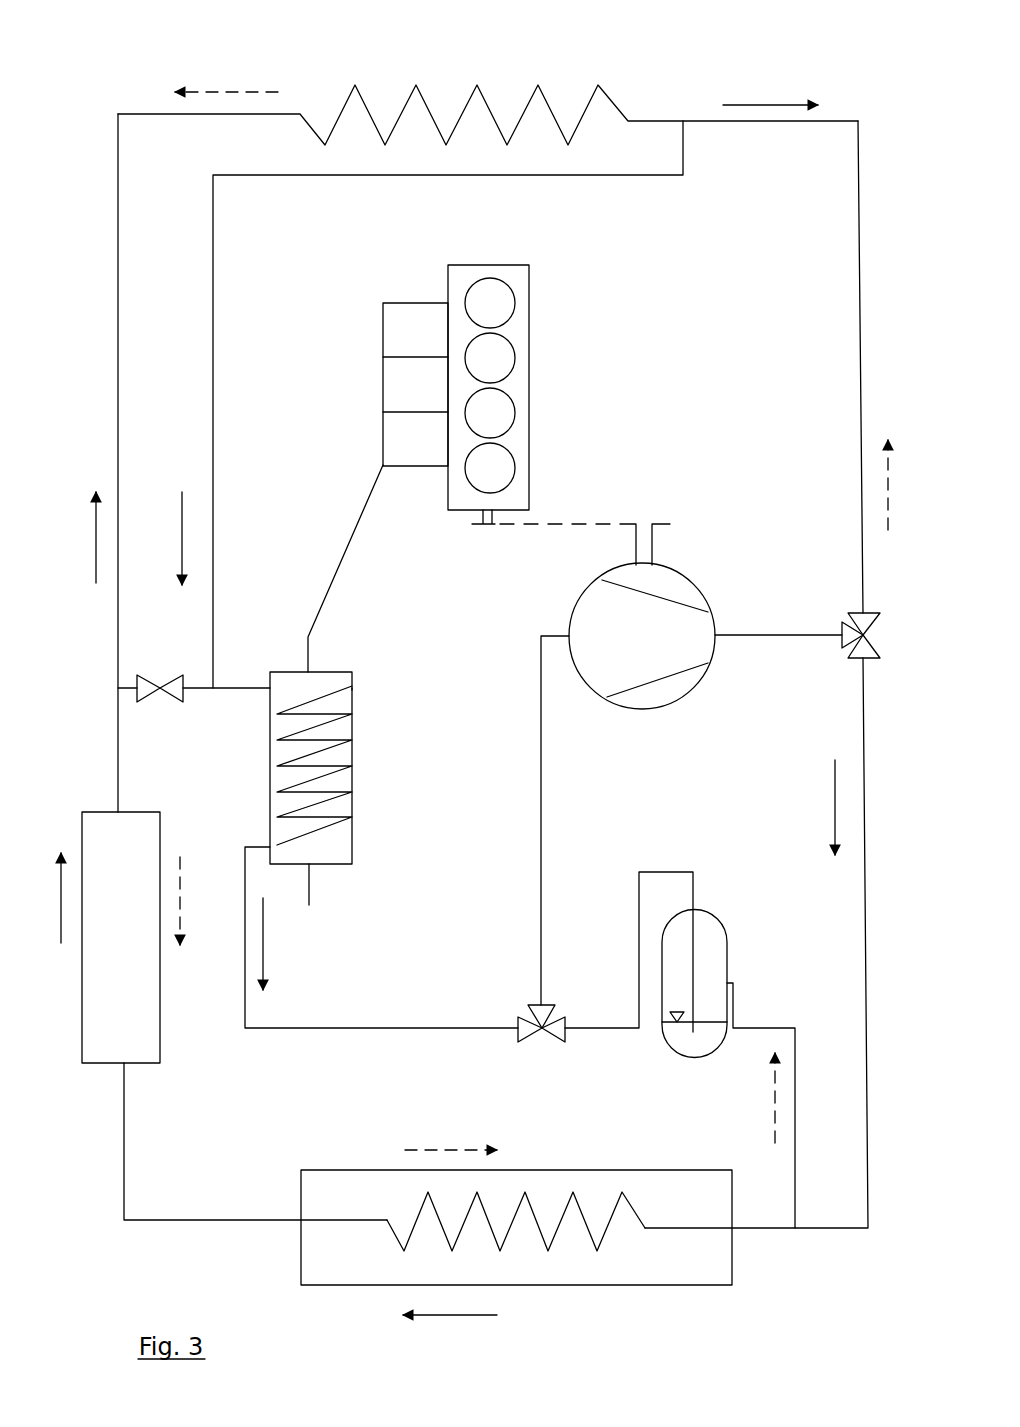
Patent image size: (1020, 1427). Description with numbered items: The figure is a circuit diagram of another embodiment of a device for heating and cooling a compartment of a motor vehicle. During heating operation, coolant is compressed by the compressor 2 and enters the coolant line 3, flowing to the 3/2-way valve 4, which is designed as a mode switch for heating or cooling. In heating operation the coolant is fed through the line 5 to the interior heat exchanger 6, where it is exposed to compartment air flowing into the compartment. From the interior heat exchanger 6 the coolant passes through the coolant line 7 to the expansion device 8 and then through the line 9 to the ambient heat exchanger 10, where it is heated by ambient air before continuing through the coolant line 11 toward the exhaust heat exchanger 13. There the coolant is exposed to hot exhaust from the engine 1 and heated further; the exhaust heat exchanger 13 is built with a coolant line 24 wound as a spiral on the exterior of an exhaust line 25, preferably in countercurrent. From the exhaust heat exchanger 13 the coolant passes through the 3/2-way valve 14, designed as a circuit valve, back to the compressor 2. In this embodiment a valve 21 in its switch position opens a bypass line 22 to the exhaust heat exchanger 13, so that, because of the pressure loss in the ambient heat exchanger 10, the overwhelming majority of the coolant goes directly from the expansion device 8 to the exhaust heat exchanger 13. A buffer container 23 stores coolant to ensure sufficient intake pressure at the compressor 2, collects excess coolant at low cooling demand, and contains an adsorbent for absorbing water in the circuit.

The engine 1 is at (532, 406).
The compressor 2 is at (677, 705).
The coolant line 3 is at (748, 635).
The 3/2-way valve 4 is at (870, 627).
The line 5 is at (868, 768).
The interior heat exchanger 6 is at (658, 1285).
The coolant line 7 is at (122, 1160).
The expansion device 8 is at (172, 1029).
The line 9 is at (120, 762).
The ambient heat exchanger 10 is at (535, 85).
The coolant line 11 is at (607, 175).
The exhaust heat exchanger 13 is at (352, 750).
The 3/2-way valve 14 is at (555, 1040).
The valve 21 is at (152, 680).
The bypass line 22 is at (197, 692).
The buffer container 23 is at (672, 990).
The coolant line 24 is at (325, 688).
The exhaust line 25 is at (348, 550).